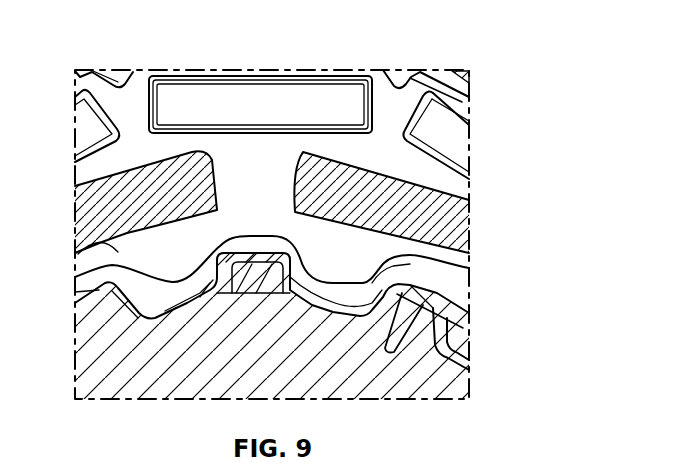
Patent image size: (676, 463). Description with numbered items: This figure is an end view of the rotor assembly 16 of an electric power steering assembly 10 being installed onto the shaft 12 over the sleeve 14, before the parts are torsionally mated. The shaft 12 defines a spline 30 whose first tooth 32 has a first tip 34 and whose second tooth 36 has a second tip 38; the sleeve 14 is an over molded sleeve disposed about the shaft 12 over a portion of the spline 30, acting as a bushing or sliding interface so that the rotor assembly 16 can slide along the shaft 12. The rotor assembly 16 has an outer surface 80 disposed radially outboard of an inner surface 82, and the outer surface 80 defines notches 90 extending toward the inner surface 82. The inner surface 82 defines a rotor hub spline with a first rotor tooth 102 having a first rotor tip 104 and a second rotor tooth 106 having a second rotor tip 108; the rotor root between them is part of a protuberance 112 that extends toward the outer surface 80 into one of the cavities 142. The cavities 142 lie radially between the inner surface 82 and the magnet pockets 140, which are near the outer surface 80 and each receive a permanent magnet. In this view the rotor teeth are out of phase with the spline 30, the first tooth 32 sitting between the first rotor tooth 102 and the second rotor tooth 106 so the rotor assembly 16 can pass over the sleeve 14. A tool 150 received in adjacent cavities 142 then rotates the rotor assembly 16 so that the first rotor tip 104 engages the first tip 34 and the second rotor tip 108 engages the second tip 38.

The electric power steering assembly 10 is at (498, 43).
The shaft 12 is at (446, 413).
The sleeve 14 is at (440, 304).
The rotor assembly 16 is at (392, 68).
The spline 30 is at (458, 338).
The first tooth 32 is at (245, 285).
The first tip 34 is at (254, 266).
The second tooth 36 is at (424, 330).
The second tip 38 is at (426, 302).
The outer surface 80 is at (86, 69).
The inner surface 82 is at (84, 292).
The notches 90 is at (113, 77).
The first rotor tooth 102 is at (179, 268).
The first rotor tip 104 is at (80, 272).
The second rotor tooth 106 is at (351, 270).
The second rotor tip 108 is at (467, 268).
The protuberance 112 is at (84, 246).
The magnet pockets 140 is at (466, 102).
The cavities 142 is at (455, 176).
The tool 150 is at (91, 208).